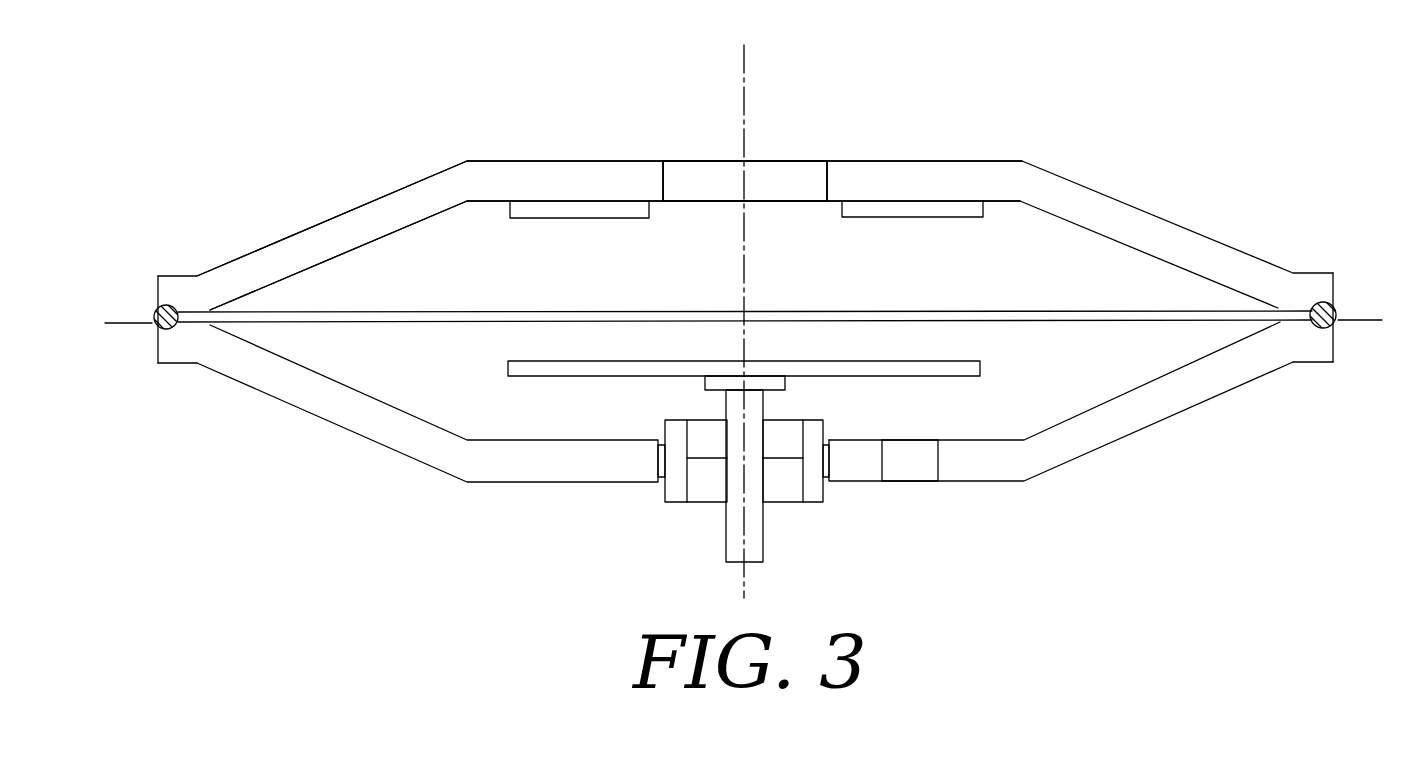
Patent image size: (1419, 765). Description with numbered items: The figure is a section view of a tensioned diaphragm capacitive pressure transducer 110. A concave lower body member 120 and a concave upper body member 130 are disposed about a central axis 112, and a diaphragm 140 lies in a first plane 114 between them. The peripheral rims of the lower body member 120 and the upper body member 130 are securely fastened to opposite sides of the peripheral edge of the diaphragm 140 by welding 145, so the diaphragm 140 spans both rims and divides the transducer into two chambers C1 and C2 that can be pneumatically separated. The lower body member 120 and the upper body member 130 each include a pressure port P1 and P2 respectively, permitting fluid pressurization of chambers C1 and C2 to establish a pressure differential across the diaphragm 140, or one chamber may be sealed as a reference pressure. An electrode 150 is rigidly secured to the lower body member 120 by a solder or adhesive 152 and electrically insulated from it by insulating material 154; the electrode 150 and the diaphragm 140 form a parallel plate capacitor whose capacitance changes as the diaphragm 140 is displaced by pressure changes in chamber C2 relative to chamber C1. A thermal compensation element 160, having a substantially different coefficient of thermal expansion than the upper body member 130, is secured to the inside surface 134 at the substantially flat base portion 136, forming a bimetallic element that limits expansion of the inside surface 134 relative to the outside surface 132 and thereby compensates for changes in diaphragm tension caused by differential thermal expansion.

The tensioned diaphragm capacitive pressure transducer 110 is at (356, 86).
The central axis 112 is at (744, 60).
The first plane 114 is at (1367, 322).
The lower body member 120 is at (1107, 427).
The upper body member 130 is at (1108, 210).
The outside surface 132 is at (1002, 155).
The inside surface 134 is at (373, 262).
The flat base portion 136 is at (612, 175).
The diaphragm 140 is at (418, 322).
The welding 145 is at (1334, 310).
The electrode 150 is at (541, 372).
The solder or adhesive 152 is at (663, 465).
The insulating material 154 is at (787, 492).
The thermal compensation element 160 is at (550, 210).
The pressure port P1 is at (913, 460).
The pressure port P2 is at (772, 180).
The chamber C1 is at (1062, 378).
The chamber C2 is at (1063, 285).